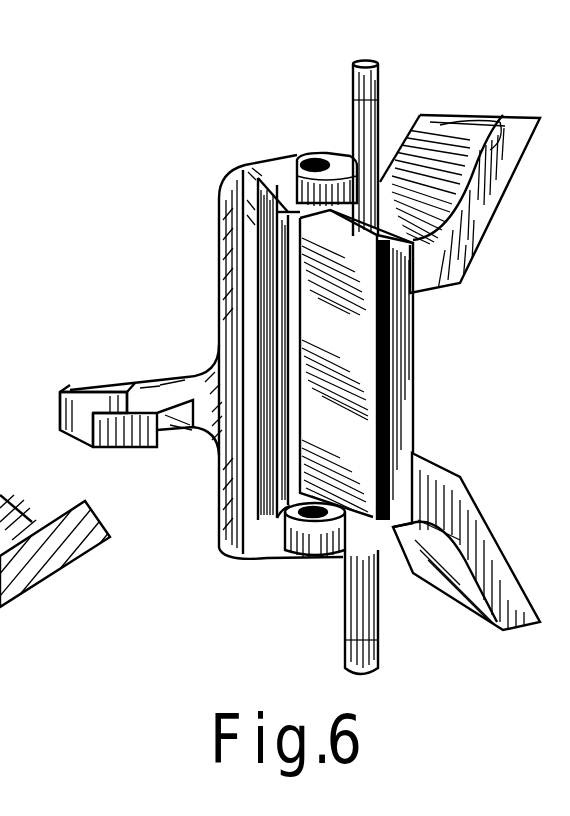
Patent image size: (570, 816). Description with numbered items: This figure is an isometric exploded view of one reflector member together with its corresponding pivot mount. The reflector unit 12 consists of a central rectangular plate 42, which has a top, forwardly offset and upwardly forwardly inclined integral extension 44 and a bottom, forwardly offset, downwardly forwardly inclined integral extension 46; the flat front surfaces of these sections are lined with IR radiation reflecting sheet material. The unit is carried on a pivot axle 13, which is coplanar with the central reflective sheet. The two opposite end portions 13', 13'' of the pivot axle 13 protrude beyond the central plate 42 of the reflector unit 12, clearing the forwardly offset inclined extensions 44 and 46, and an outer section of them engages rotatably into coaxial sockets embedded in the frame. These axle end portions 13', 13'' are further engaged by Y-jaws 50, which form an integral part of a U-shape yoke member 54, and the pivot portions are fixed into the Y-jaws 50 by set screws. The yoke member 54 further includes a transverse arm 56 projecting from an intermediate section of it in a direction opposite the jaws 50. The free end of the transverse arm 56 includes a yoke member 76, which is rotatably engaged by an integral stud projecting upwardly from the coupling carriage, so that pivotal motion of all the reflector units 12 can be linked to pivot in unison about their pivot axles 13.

The reflector unit 12 is at (498, 216).
The pivot axle 13 is at (399, 353).
The end portion of pivot axle 13' is at (329, 118).
The end portion of pivot axle 13'' is at (188, 632).
The central rectangular plate 42 is at (405, 380).
The top integral extension 44 is at (470, 140).
The bottom integral extension 46 is at (468, 512).
The Y-jaws 50 is at (305, 152).
The U-shape yoke member 54 is at (220, 222).
The transverse arm 56 is at (188, 376).
The yoke member 76 is at (105, 396).